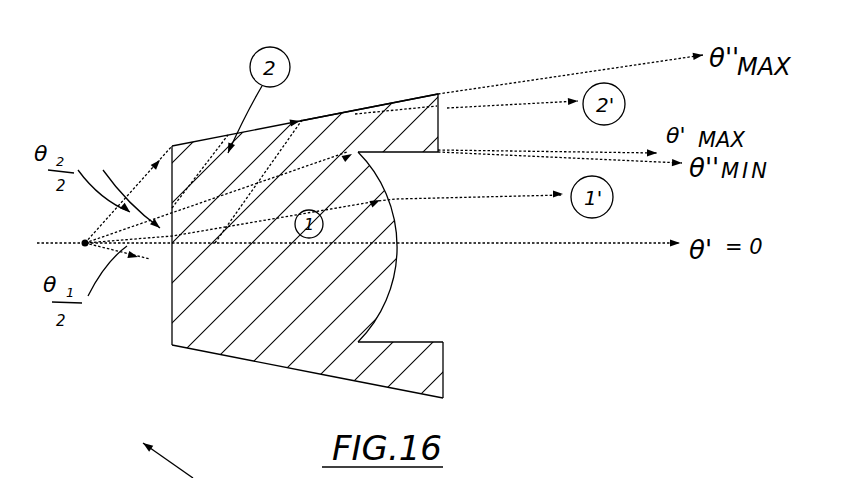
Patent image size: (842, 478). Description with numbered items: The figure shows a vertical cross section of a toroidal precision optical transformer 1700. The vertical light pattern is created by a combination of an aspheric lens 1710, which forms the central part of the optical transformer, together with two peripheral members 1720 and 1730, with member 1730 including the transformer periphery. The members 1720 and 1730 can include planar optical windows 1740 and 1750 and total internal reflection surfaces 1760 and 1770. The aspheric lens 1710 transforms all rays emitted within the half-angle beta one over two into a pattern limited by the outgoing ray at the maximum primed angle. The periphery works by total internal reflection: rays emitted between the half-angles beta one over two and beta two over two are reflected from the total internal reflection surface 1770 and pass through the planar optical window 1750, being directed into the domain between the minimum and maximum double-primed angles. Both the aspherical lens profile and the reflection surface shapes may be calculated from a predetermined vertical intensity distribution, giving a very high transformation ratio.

The toroidal precision optical transformer 1700 is at (142, 92).
The aspheric lens 1710 is at (400, 283).
The member 1720 is at (405, 391).
The member 1730 is at (392, 82).
The planar optical window 1740 is at (450, 373).
The planar optical window 1750 is at (446, 103).
The total internal reflection surface 1760 is at (280, 367).
The total internal reflection surface 1770 is at (378, 76).